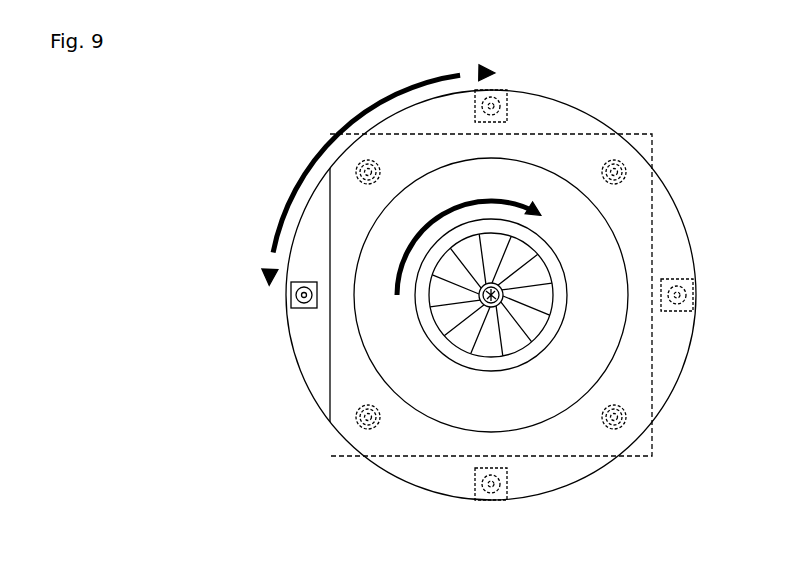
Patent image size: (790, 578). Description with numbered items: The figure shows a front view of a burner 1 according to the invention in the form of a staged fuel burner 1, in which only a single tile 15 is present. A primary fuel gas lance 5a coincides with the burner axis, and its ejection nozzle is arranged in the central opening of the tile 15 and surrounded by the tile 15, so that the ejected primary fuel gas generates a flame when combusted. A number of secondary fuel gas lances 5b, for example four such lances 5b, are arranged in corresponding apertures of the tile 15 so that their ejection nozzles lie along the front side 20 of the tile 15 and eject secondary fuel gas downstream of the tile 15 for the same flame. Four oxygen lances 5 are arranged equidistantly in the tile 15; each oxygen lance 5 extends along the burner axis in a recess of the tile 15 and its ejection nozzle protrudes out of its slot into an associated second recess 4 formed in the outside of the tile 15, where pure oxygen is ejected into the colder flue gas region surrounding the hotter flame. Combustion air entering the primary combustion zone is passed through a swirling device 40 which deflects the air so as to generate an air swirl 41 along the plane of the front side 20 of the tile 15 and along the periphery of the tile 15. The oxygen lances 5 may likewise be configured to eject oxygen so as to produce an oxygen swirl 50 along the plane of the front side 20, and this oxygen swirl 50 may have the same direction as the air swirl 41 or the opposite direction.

The staged fuel burner 1 is at (628, 117).
The second recess 4 is at (318, 366).
The oxygen lance 5 is at (293, 306).
The primary fuel gas lance 5a is at (493, 297).
The secondary fuel gas lance 5b is at (375, 429).
The tile 15 is at (434, 151).
The front side 20 is at (353, 202).
The swirling device 40 is at (476, 341).
The air swirl 41 is at (470, 198).
The oxygen swirl 50 is at (322, 150).